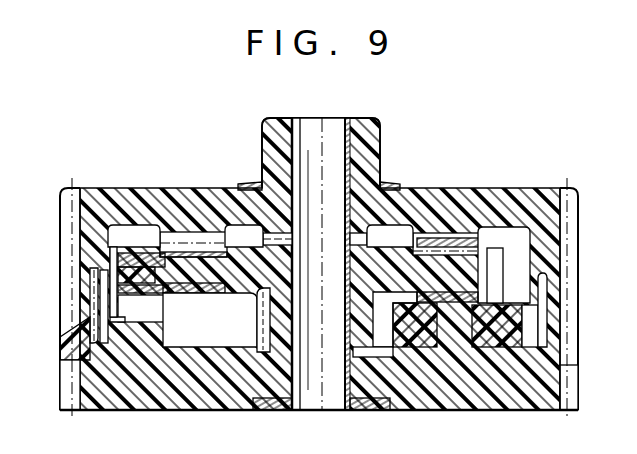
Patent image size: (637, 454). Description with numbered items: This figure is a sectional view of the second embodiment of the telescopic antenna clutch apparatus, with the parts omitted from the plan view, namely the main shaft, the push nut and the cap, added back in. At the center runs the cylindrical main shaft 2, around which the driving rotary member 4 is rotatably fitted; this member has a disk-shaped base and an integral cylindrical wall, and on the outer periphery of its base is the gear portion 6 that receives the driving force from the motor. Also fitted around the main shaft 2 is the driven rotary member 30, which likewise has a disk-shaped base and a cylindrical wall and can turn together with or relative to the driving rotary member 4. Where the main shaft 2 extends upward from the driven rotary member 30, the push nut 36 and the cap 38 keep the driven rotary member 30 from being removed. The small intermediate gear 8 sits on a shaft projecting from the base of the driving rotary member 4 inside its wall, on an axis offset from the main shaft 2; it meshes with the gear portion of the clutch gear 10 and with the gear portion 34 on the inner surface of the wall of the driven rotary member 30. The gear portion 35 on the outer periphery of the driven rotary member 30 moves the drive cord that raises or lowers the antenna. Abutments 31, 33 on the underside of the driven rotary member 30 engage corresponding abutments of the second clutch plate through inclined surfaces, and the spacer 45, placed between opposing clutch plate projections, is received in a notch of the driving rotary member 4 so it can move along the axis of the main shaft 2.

The main shaft 2 is at (334, 138).
The driving rotary member 4 is at (418, 411).
The gear portion 6 is at (62, 388).
The intermediate gear 8 is at (518, 322).
The clutch gear 10 is at (349, 245).
The driven rotary member 30 is at (100, 188).
The abutment 31 is at (205, 228).
The abutment 33 is at (478, 228).
The gear portion 34 is at (98, 312).
The gear portion 35 is at (64, 238).
The push nut 36 is at (401, 186).
The cap 38 is at (381, 140).
The spacer 45 is at (108, 263).